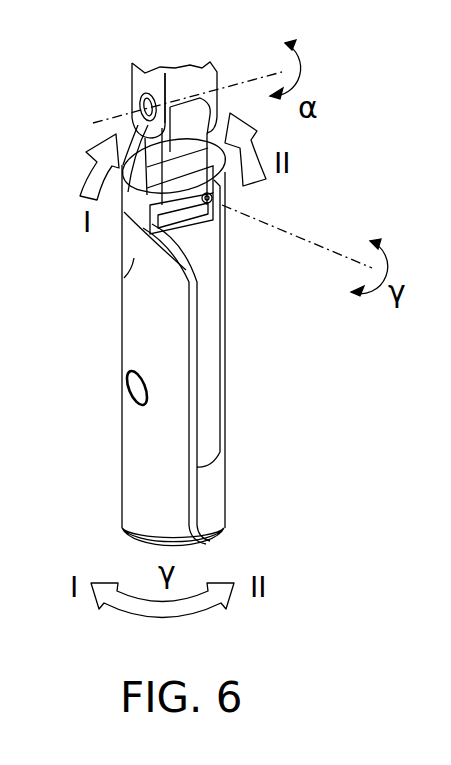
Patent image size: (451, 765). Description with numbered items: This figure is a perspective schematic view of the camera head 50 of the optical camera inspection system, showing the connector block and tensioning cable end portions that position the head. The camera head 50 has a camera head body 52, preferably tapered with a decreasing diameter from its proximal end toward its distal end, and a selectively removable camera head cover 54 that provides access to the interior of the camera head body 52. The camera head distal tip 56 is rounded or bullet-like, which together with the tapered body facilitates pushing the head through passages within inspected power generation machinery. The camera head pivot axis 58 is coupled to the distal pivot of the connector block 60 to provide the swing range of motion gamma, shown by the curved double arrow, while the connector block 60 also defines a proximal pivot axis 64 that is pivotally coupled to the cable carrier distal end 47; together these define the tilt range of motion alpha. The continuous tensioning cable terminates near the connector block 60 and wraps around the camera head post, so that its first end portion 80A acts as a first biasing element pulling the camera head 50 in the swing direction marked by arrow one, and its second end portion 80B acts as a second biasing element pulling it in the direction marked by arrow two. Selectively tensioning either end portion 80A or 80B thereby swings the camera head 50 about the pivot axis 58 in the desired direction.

The cable carrier distal end 47 is at (217, 76).
The proximal pivot axis 64 is at (144, 109).
The camera head cover 54 is at (136, 327).
The camera head distal tip 56 is at (142, 556).
The camera head body 52 is at (226, 287).
The camera head pivot axis 58 is at (223, 199).
The second end portion 80B is at (211, 194).
The connector block 60 is at (130, 228).
The first end portion 80A is at (124, 278).
The camera head 50 is at (237, 353).